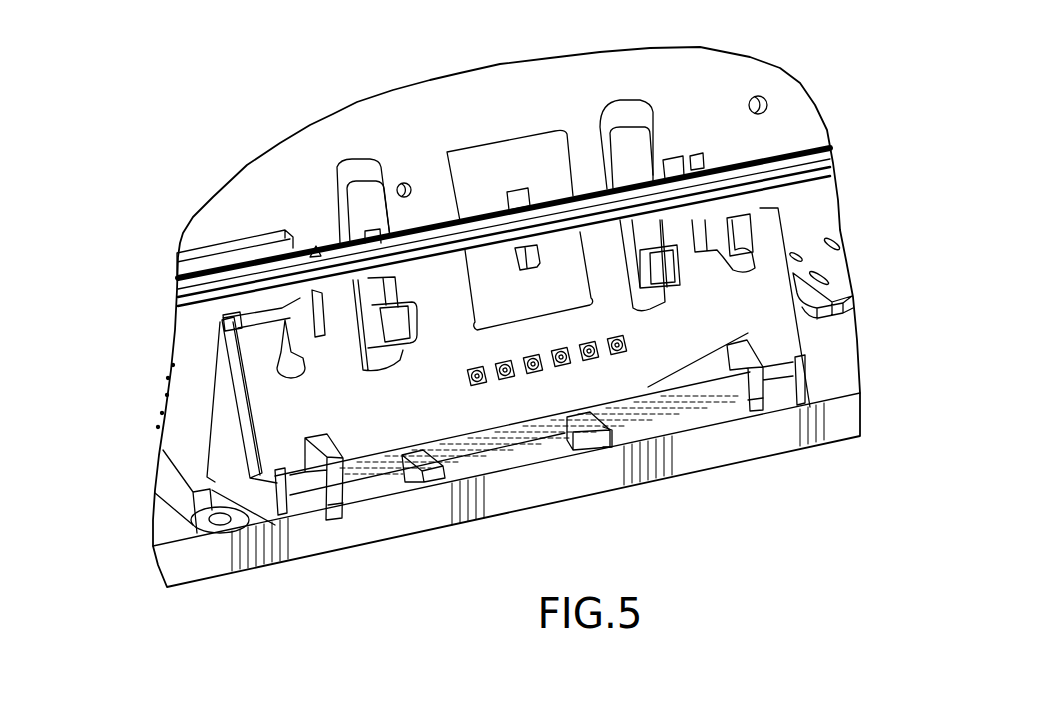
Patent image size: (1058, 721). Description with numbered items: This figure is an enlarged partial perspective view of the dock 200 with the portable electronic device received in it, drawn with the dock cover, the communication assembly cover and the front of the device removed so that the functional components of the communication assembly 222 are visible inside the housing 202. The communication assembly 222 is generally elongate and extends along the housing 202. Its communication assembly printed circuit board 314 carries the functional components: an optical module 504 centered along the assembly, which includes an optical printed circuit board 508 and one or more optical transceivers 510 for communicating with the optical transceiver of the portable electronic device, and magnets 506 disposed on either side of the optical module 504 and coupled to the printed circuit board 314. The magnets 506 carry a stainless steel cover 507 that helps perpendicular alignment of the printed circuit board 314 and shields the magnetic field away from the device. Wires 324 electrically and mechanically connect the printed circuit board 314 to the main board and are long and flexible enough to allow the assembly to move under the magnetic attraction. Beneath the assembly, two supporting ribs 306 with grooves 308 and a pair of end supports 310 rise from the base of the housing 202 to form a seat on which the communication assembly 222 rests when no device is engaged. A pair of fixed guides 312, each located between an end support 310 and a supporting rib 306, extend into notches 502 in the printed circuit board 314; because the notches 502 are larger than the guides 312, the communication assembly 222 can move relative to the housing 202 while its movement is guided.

The dock 200 is at (178, 619).
The housing 202 is at (832, 432).
The communication assembly 222 is at (792, 268).
The supporting ribs 306 is at (607, 430).
The grooves 308 is at (398, 465).
The end supports 310 is at (305, 497).
The guides 312 is at (333, 497).
The communication assembly printed circuit board 314 is at (652, 383).
The wires 324 is at (197, 423).
The notches 502 is at (310, 437).
The optical module 504 is at (473, 175).
The magnets 506 is at (380, 293).
The cover 507 is at (395, 360).
The optical printed circuit board 508 is at (487, 313).
The optical transceivers 510 is at (532, 250).